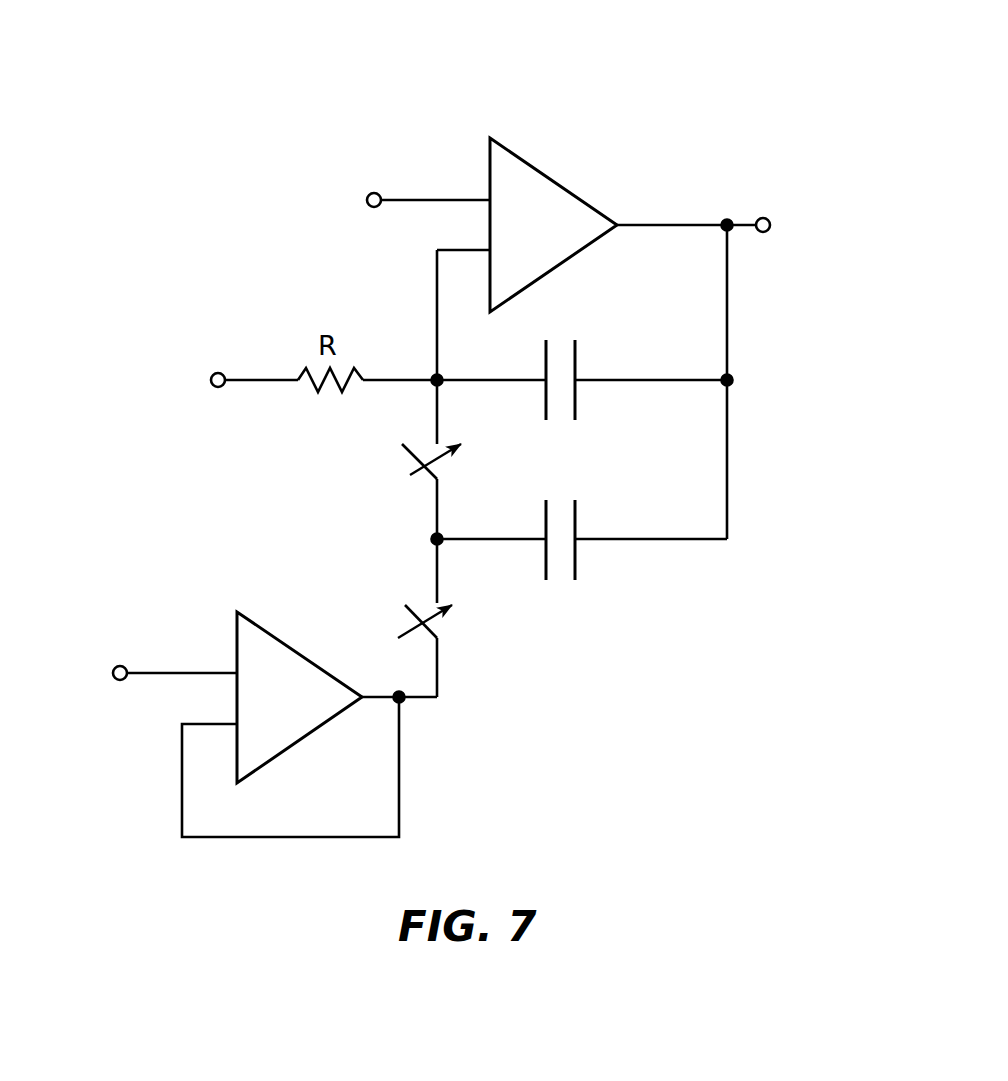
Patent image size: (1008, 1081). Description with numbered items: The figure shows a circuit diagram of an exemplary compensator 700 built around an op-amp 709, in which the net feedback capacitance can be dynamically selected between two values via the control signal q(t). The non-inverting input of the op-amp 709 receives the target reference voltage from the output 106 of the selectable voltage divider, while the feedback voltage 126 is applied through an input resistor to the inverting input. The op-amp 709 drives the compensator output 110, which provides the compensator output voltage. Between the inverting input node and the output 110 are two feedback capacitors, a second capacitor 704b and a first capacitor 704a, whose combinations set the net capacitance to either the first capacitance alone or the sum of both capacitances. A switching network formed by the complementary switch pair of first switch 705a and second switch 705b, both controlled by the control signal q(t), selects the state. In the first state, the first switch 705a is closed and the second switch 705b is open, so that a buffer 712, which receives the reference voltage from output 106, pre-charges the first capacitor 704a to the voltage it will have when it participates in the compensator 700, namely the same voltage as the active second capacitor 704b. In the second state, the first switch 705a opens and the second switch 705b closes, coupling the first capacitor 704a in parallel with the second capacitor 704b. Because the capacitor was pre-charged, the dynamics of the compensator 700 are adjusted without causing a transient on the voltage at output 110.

The compensator 700 is at (350, 63).
The output of selectable voltage divider 106 is at (360, 188).
The op-amp 709 is at (556, 183).
The output 110 is at (766, 216).
The feedback voltage 126 is at (208, 363).
The capacitor C2 704b is at (590, 398).
The capacitor C1 704a is at (590, 562).
The second switch 705b is at (410, 486).
The first switch 705a is at (410, 592).
The buffer 712 is at (220, 645).